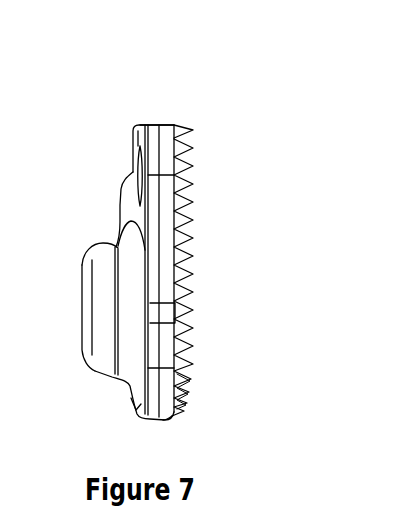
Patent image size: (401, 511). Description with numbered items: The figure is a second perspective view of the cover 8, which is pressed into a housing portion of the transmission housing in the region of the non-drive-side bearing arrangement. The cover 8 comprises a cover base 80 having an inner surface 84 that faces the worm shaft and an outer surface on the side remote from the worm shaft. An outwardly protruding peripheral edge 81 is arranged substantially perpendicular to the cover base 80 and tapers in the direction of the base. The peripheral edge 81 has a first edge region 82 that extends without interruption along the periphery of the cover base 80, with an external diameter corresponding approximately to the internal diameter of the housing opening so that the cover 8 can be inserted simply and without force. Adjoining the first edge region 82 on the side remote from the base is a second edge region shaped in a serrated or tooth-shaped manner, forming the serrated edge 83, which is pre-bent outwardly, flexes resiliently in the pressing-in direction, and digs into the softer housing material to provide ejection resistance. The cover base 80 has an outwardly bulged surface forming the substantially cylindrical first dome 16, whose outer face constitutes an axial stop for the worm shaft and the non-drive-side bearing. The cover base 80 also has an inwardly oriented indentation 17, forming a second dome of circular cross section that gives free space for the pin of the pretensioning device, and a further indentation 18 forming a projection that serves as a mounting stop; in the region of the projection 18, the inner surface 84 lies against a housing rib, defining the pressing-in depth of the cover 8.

The cover 8 is at (216, 110).
The first dome 16 is at (105, 283).
The indentation 17 is at (134, 127).
The indentation 18 is at (127, 180).
The cover base 80 is at (119, 187).
The peripheral edge 81 is at (143, 410).
The first edge region 82 is at (160, 127).
The serrated edge 83 is at (194, 217).
The inner surface 84 is at (119, 212).